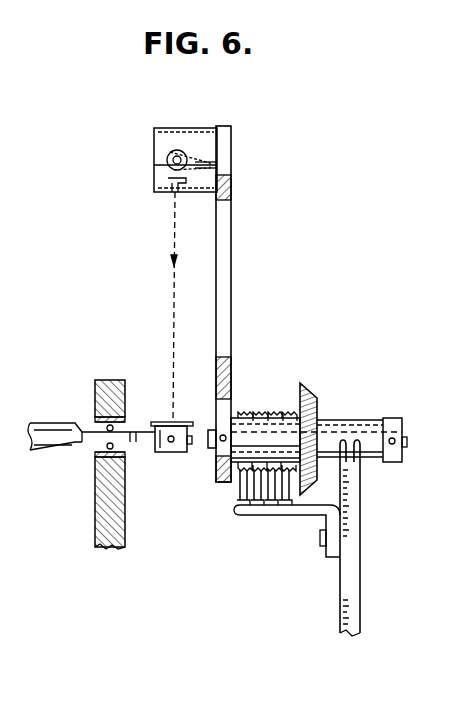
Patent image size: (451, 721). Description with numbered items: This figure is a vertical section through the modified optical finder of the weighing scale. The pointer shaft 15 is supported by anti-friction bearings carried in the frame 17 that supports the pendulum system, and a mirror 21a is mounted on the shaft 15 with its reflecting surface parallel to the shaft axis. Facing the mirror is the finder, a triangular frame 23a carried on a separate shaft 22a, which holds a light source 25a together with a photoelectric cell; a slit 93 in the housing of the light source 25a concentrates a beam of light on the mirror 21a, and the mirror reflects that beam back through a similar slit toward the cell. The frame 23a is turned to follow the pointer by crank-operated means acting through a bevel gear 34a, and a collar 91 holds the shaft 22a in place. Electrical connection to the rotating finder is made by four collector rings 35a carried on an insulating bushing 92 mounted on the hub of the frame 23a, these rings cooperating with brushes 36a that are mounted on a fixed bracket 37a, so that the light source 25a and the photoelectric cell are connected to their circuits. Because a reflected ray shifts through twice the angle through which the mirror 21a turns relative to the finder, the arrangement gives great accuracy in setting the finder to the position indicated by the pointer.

The shaft 15 is at (60, 410).
The frame 17 is at (100, 488).
The mirror 21a is at (163, 422).
The shaft 22a is at (210, 442).
The triangular frame 23a is at (225, 232).
The light source 25a is at (170, 144).
The bevel gear 34a is at (309, 393).
The collector rings 35a is at (286, 410).
The brushes 36a is at (284, 503).
The fixed bracket 37a is at (322, 514).
The collar 91 is at (397, 462).
The insulating bushing 92 is at (240, 408).
The slit 93 is at (173, 183).